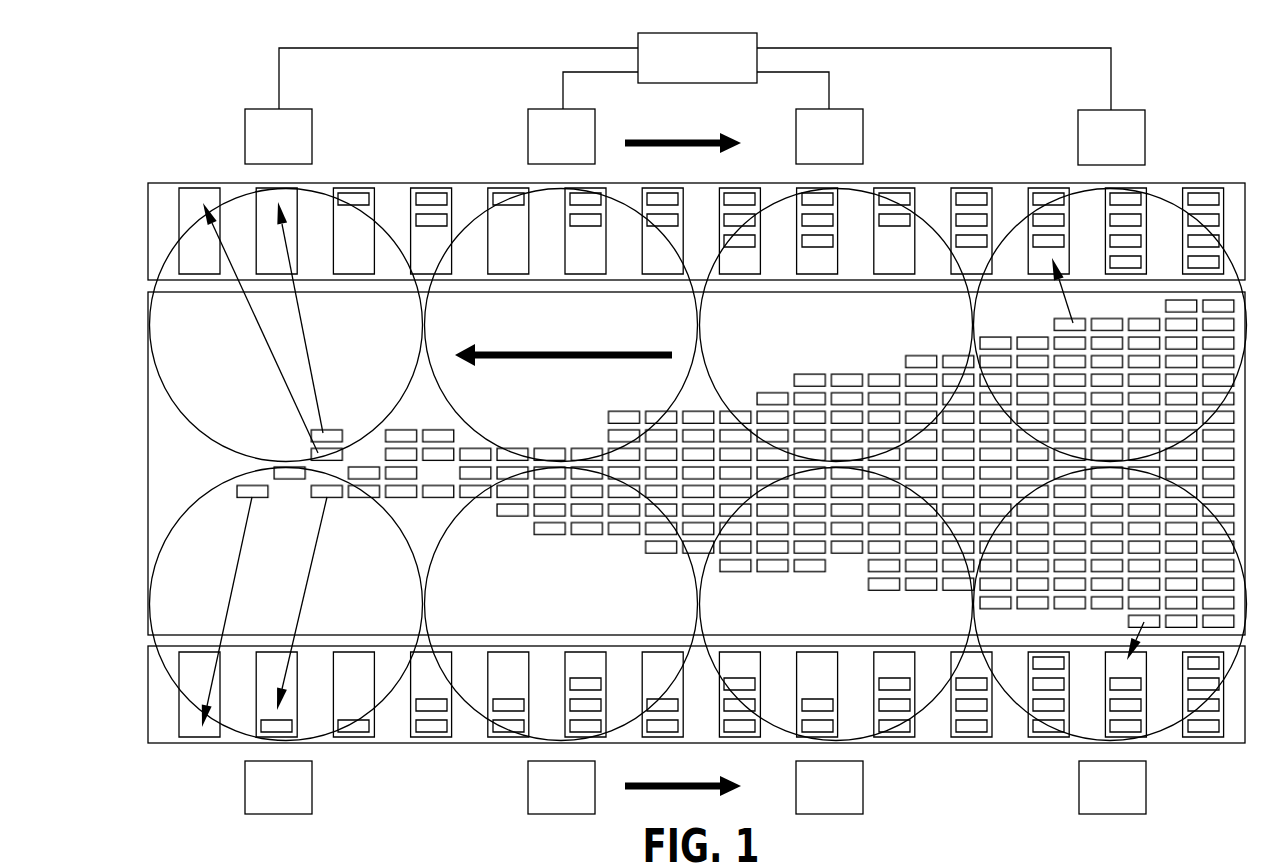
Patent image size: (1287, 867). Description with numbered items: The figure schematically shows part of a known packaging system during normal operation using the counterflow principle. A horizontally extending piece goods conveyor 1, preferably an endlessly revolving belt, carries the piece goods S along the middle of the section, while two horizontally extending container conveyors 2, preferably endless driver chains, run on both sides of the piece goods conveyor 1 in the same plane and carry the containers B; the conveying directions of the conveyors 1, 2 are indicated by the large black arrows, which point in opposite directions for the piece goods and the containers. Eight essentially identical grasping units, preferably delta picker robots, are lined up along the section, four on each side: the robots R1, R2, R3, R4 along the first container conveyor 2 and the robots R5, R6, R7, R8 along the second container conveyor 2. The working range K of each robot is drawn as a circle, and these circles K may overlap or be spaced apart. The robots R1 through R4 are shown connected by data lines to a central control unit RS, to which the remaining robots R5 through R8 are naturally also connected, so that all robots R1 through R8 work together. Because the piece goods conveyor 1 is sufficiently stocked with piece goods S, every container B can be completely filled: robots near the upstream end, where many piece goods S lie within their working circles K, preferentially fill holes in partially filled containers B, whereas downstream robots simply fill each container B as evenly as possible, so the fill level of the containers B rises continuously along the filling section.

The piece goods conveyor 1 is at (160, 443).
The container conveyor 2 is at (160, 707).
The working range K is at (162, 550).
The piece goods S is at (1262, 728).
The container B is at (976, 780).
The robot R1 is at (1111, 137).
The robot R2 is at (829, 136).
The robot R3 is at (561, 136).
The robot R4 is at (278, 136).
The robot R5 is at (1112, 787).
The robot R6 is at (829, 787).
The robot R7 is at (561, 787).
The robot R8 is at (278, 787).
The central control unit RS is at (697, 58).